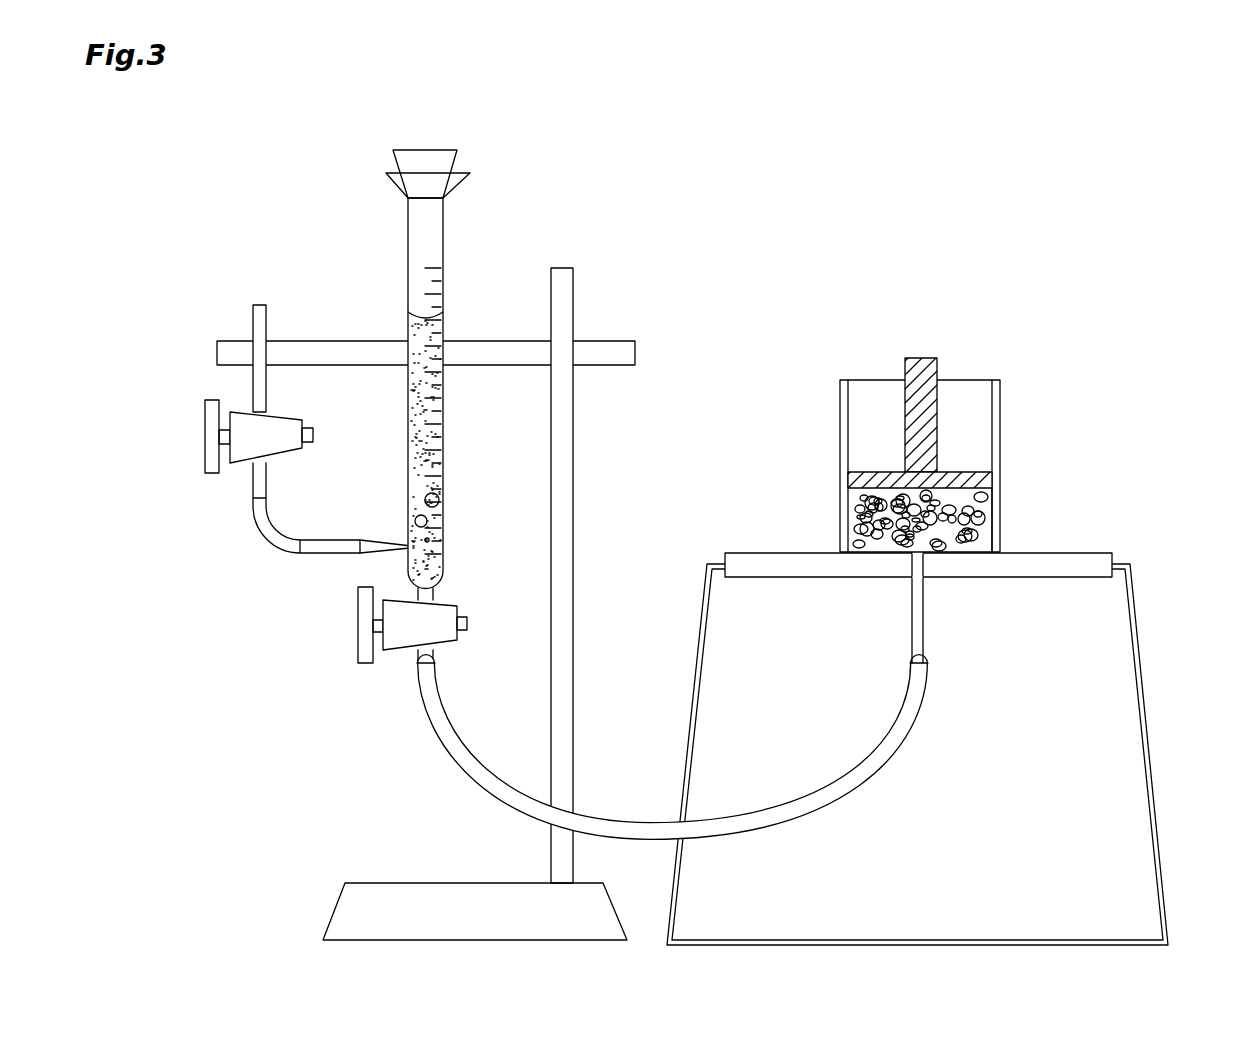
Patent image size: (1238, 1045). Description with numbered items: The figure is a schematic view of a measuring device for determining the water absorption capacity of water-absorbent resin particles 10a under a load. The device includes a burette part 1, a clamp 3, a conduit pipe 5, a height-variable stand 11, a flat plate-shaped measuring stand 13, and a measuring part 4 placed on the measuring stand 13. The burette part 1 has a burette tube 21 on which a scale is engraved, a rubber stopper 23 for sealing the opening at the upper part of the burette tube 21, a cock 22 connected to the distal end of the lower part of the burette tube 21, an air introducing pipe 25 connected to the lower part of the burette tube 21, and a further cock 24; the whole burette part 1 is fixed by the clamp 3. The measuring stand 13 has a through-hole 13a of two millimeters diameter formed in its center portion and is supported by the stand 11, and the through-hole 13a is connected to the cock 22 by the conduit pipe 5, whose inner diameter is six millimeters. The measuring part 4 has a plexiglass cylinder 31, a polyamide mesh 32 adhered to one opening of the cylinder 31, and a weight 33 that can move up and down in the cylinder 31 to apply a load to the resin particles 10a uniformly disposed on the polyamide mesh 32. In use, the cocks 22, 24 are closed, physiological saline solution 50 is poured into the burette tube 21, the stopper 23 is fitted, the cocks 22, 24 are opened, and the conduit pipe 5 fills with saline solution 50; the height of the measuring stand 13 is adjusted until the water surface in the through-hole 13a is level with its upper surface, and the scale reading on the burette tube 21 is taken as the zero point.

The burette part 1 is at (190, 110).
The clamp 3 is at (575, 447).
The measuring part 4 is at (916, 415).
The conduit pipe 5 is at (487, 778).
The water-absorbent resin particles 10a is at (995, 520).
The stand 11 is at (1158, 812).
The measuring stand 13 is at (927, 575).
The through-hole 13a is at (921, 600).
The burette tube 21 is at (435, 430).
The cock 22 is at (395, 640).
The rubber stopper 23 is at (430, 160).
The cock 24 is at (290, 442).
The air introducing pipe 25 is at (270, 535).
The cylinder 31 is at (840, 405).
The polyamide mesh 32 is at (855, 527).
The weight 33 is at (918, 365).
The saline solution 50 is at (445, 397).